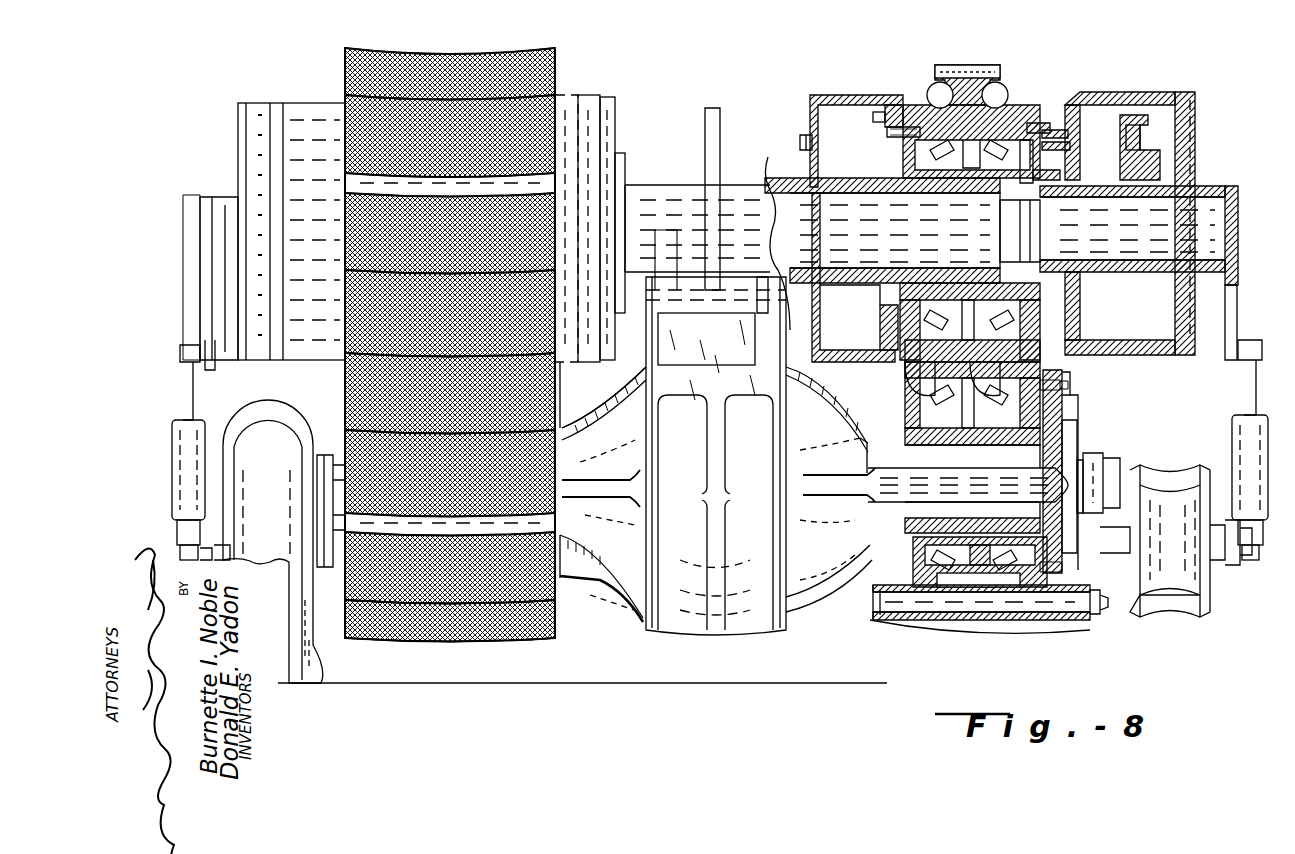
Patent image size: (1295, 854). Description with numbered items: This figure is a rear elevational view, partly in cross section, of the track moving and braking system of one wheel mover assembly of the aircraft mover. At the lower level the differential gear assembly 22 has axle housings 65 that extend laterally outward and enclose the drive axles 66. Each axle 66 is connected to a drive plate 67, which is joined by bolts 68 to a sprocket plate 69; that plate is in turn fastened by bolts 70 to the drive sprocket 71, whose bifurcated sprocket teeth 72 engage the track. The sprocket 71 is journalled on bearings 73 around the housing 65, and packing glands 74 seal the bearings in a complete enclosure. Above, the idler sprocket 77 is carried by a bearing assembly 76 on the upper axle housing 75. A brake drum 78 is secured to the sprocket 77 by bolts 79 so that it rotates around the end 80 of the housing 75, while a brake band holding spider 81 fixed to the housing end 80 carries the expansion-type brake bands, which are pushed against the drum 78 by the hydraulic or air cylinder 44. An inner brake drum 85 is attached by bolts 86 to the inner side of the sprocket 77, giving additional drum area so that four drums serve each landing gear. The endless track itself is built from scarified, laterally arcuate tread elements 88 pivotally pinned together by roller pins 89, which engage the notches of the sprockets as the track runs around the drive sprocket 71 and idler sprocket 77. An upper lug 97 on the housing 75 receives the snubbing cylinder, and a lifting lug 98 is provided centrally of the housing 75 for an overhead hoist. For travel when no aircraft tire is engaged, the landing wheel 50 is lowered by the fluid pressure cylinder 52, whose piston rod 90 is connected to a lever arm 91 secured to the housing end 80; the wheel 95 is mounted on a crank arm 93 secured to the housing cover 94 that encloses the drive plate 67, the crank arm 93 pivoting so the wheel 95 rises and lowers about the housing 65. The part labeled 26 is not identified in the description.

The differential gear assembly 22 is at (810, 578).
The roller 26 is at (562, 625).
The hydraulic cylinder 44 is at (262, 146).
The landing wheel 50 is at (291, 541).
The fluid pressure cylinder 52 is at (178, 446).
The axle housing 65 is at (572, 412).
The drive axle 66 is at (978, 493).
The drive plate 67 is at (1070, 443).
The bolts 68 is at (1078, 420).
The sprocket plate 69 is at (1062, 397).
The bolts 70 is at (1064, 384).
The sprocket 71 is at (1062, 571).
The bifurcated sprocket teeth 72 is at (977, 593).
The bearings 73 is at (972, 480).
The packing glands 74 is at (915, 402).
The upper axle housing 75 is at (768, 176).
The bearing assembly 76 is at (950, 290).
The idler sprocket 77 is at (1002, 95).
The brake drum 78 is at (1092, 104).
The bolts 79 is at (1070, 147).
The housing end 80 is at (1205, 190).
The brake band holding spider 81 is at (1140, 165).
The inner brake drum 85 is at (853, 351).
The bolts 86 is at (888, 132).
The tread elements 88 is at (557, 62).
The roller pins 89 is at (878, 606).
The piston rod 90 is at (1245, 390).
The lever arm 91 is at (1229, 292).
The crank arm 93 is at (1112, 470).
The housing cover 94 is at (1072, 447).
The wheel 95 is at (1180, 478).
The upper lug 97 is at (668, 273).
The lifting lug 98 is at (705, 120).